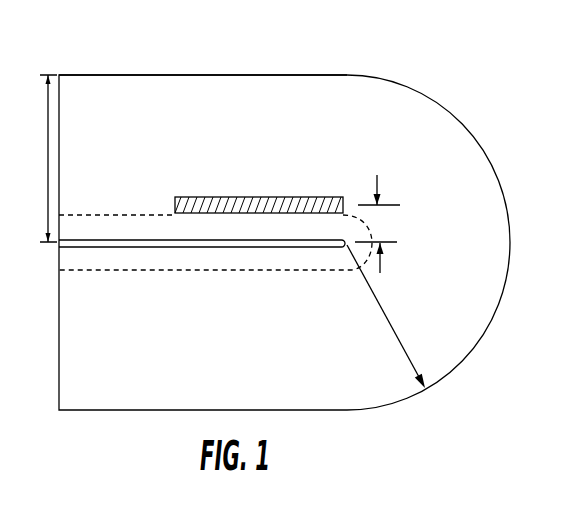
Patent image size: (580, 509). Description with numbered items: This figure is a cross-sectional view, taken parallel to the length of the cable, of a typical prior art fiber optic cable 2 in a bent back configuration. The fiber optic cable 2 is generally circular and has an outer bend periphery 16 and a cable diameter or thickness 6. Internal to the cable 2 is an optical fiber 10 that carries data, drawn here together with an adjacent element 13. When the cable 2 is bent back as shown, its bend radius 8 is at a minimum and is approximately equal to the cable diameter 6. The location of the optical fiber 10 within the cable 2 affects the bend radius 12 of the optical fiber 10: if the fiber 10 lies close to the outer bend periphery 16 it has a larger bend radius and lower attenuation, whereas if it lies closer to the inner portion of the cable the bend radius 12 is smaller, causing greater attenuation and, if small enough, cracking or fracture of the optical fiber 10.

The fiber optic cable 2 is at (321, 58).
The outer bend periphery 16 is at (175, 75).
The cable diameter 6 is at (47, 195).
The optical fiber 10 is at (325, 197).
The support plate 13 is at (262, 197).
The bend radius of the optical fiber 12 is at (397, 220).
The bend radius 8 is at (400, 337).